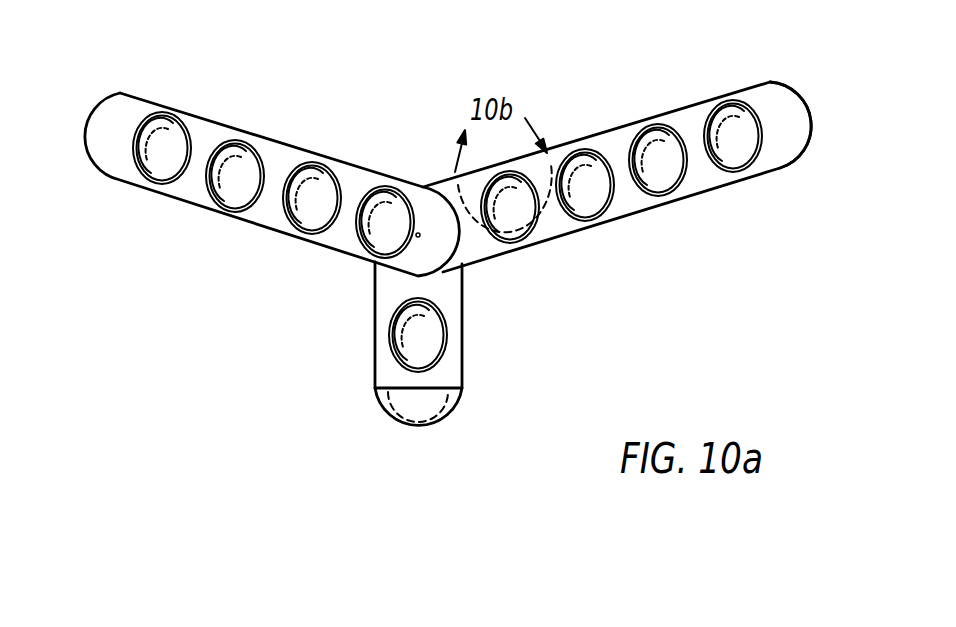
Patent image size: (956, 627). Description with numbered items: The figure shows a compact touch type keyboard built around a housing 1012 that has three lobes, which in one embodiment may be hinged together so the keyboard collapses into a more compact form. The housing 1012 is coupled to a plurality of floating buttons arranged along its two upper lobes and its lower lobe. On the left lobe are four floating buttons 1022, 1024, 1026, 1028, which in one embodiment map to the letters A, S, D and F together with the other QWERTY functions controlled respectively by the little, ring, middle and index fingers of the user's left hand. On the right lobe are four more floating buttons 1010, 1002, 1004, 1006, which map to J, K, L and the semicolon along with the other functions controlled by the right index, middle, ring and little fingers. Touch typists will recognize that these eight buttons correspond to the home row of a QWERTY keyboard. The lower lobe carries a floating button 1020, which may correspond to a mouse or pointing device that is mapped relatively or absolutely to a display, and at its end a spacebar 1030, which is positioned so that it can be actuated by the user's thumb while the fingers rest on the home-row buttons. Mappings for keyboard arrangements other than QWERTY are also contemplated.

The floating button 1002 is at (597, 198).
The floating button 1004 is at (667, 175).
The floating button 1006 is at (737, 145).
The floating button 1010 is at (515, 220).
The housing 1012 is at (788, 113).
The floating button 1020 is at (418, 335).
The floating button 1022 is at (166, 135).
The floating button 1024 is at (237, 160).
The floating button 1026 is at (318, 190).
The floating button 1028 is at (387, 212).
The spacebar 1030 is at (397, 410).